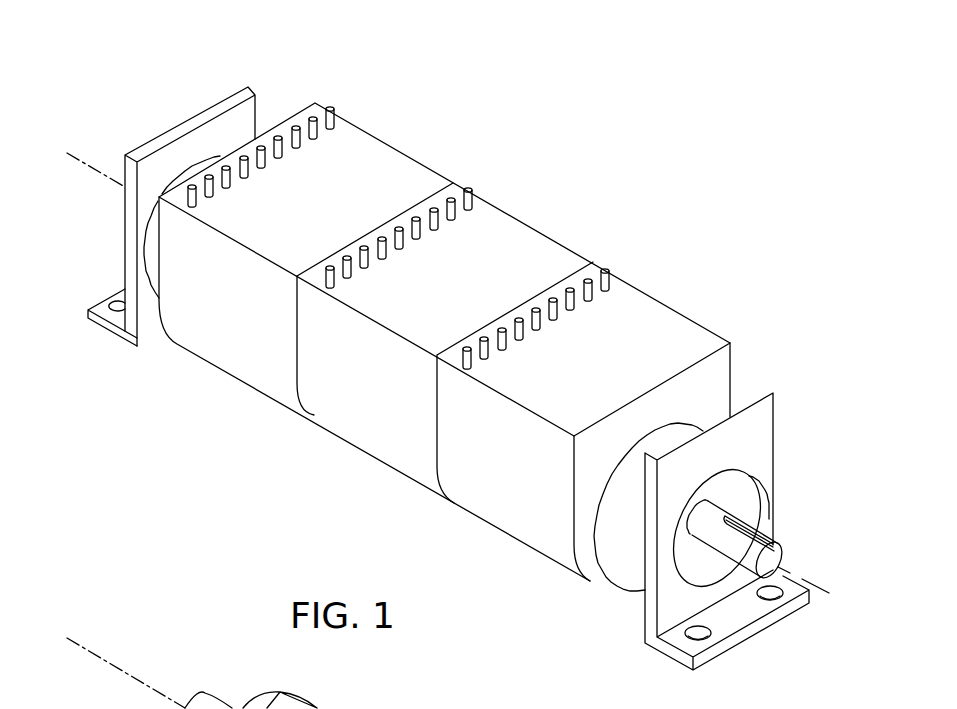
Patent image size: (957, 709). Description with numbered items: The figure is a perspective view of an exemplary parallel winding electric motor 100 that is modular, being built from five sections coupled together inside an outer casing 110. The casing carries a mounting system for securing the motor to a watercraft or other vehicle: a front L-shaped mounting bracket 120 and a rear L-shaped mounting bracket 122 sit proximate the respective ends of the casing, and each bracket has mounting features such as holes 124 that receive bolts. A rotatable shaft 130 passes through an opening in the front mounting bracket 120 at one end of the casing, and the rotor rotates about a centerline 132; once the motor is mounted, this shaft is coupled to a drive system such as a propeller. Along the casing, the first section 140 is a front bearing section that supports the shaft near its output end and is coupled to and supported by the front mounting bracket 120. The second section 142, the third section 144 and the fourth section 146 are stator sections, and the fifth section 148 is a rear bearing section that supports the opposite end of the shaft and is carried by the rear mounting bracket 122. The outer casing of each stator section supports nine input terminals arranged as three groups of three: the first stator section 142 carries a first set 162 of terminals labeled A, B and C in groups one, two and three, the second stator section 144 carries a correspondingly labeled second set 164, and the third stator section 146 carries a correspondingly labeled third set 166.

The parallel winding electric motor 100 is at (580, 123).
The outer casing 110 is at (330, 452).
The front L-shaped mounting bracket 120 is at (748, 400).
The rear L-shaped mounting bracket 122 is at (230, 102).
The holes 124 is at (88, 312).
The rotatable shaft 130 is at (787, 552).
The centerline 132 is at (800, 576).
The first section 140 is at (603, 520).
The second section 142 is at (670, 307).
The third section 144 is at (528, 230).
The fourth section 146 is at (393, 152).
The fifth section 148 is at (152, 258).
The first set of terminals 162 is at (623, 255).
The second set of terminals 164 is at (486, 177).
The third set of terminals 166 is at (346, 100).